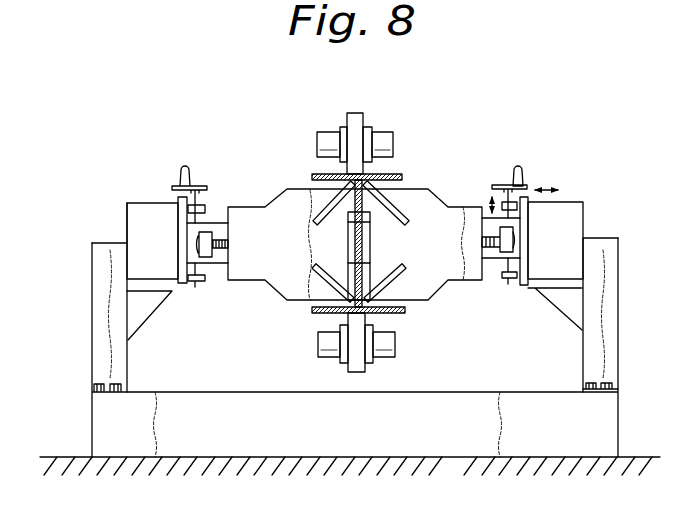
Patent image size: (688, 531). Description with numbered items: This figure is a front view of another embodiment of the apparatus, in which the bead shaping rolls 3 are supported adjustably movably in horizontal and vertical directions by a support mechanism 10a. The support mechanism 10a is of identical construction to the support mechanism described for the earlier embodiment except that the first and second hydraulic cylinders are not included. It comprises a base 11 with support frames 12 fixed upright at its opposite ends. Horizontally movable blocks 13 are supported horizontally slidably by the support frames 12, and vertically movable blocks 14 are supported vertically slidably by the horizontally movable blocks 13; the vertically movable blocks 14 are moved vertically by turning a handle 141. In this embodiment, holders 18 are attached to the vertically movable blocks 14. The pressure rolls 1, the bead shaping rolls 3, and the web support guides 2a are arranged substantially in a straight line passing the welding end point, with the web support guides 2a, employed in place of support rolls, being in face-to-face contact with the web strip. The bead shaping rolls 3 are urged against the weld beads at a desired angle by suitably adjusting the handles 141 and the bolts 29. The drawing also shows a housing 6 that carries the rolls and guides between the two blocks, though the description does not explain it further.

The pressure rolls 1 is at (364, 114).
The web support guides 2a is at (348, 243).
The bead shaping rolls 3 is at (318, 218).
The holder housing 6 is at (297, 177).
The support mechanism 10a is at (463, 159).
The base 11 is at (466, 445).
The support frames 12 is at (618, 273).
The horizontally movable blocks 13 is at (580, 205).
The vertically movable blocks 14 is at (499, 261).
The holders 18 is at (469, 282).
The bolts 29 is at (518, 238).
The handle 141 is at (520, 168).